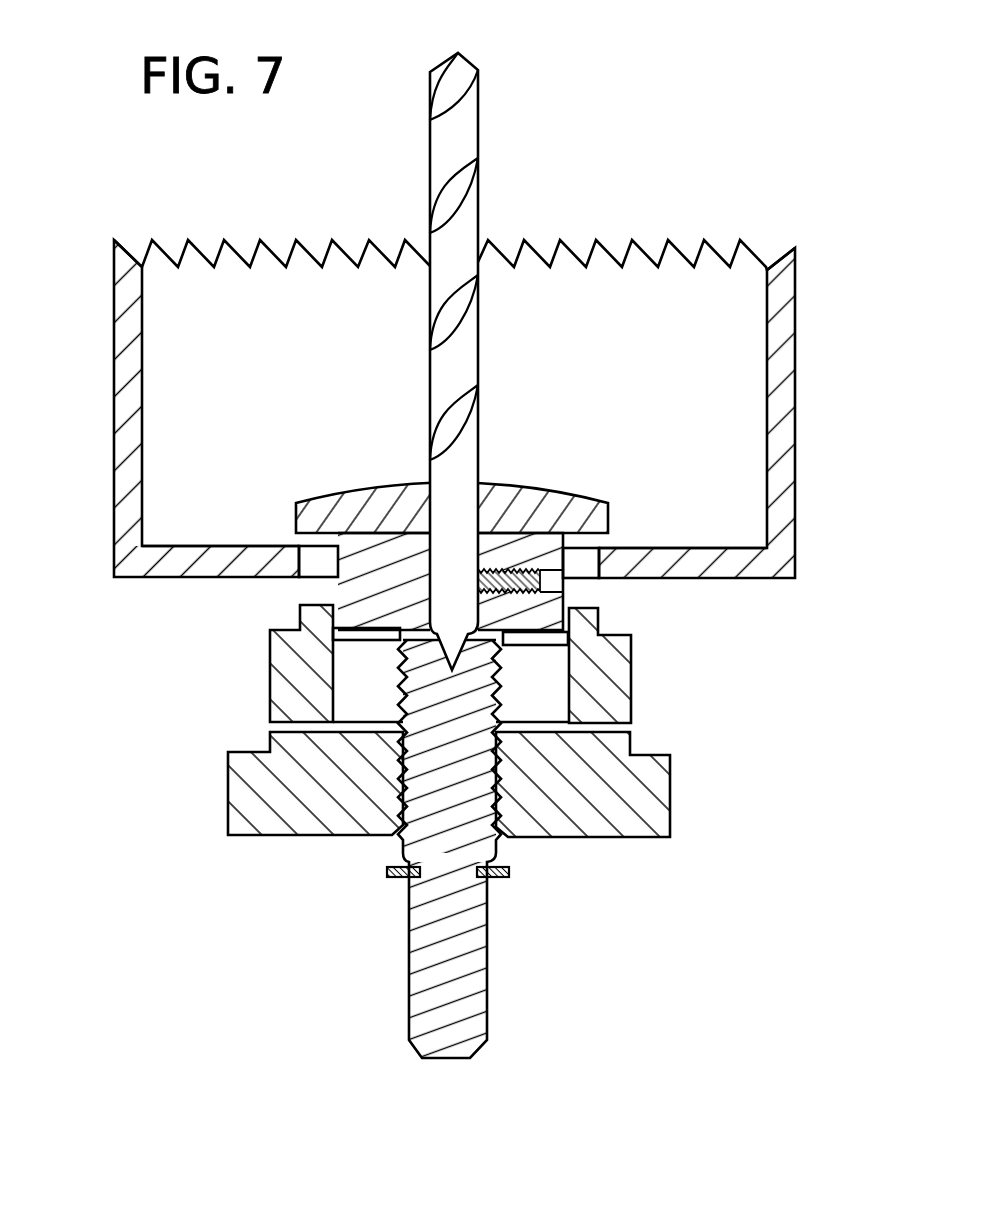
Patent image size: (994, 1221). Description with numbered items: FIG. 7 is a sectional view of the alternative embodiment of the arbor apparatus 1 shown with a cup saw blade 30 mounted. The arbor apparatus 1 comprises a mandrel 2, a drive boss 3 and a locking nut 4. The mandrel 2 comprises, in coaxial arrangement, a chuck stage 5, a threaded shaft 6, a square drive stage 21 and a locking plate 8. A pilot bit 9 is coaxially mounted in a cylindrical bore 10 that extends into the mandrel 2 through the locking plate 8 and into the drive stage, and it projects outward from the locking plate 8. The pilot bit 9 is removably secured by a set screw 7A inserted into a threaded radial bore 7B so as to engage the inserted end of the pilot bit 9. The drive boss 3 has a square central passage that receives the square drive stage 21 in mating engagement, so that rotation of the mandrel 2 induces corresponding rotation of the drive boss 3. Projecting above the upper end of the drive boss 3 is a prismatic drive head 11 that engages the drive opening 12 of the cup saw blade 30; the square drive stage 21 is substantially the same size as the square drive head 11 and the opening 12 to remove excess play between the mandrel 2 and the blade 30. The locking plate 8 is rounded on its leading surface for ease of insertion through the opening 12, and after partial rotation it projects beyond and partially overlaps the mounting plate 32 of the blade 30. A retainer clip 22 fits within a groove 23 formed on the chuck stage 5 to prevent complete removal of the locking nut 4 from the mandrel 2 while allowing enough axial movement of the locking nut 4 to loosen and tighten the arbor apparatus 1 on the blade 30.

The arbor apparatus 1 is at (168, 908).
The mandrel 2 is at (370, 956).
The drive boss 3 is at (633, 702).
The locking nut 4 is at (670, 797).
The chuck stage 5 is at (409, 1012).
The threaded shaft 6 is at (458, 815).
The set screw 7A is at (512, 577).
The threaded radial bore 7B is at (551, 581).
The locking plate 8 is at (610, 522).
The pilot bit 9 is at (482, 197).
The cylindrical bore 10 is at (408, 643).
The drive head 11 is at (605, 620).
The drive opening 12 is at (598, 570).
The square drive stage 21 is at (330, 586).
The retainer clip 22 is at (507, 875).
The groove 23 is at (483, 880).
The cup saw blade 30 is at (795, 395).
The mounting plate 32 is at (200, 547).